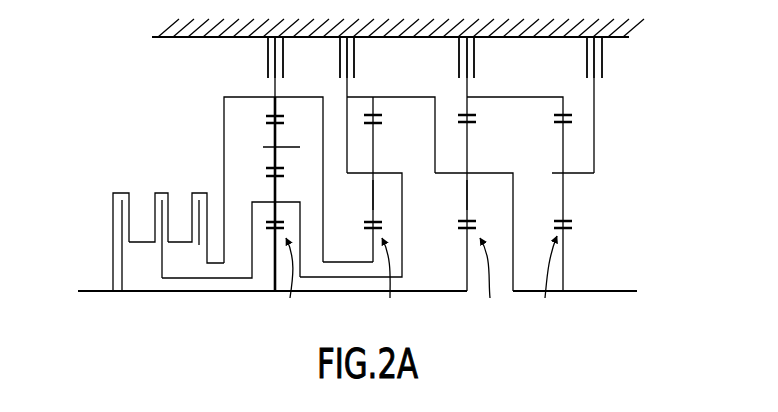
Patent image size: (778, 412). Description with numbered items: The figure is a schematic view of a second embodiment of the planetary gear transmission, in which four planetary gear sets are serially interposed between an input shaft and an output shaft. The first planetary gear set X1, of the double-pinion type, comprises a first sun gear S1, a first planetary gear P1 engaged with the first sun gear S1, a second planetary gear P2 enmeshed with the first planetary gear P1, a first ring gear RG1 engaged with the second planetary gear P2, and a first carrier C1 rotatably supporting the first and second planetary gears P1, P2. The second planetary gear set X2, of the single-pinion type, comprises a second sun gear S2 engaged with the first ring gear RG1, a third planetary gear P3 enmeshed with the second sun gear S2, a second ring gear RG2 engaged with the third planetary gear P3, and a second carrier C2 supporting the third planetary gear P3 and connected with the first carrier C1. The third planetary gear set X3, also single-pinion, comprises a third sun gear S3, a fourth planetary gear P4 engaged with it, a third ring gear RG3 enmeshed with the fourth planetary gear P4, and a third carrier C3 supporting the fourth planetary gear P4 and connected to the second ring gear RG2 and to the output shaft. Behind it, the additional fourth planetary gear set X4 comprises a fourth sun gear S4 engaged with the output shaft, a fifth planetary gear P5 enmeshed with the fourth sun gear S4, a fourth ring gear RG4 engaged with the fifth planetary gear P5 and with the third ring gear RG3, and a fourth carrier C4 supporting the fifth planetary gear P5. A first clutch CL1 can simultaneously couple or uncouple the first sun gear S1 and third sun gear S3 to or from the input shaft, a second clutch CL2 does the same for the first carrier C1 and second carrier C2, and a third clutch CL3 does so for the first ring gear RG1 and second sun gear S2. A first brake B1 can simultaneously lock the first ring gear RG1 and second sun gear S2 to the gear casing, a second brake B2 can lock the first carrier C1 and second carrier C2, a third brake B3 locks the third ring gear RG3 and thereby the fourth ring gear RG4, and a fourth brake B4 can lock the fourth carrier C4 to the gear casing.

The first brake B1 is at (265, 53).
The second brake B2 is at (356, 54).
The third brake B3 is at (477, 54).
The fourth brake B4 is at (604, 55).
The first ring gear RG1 is at (276, 98).
The second ring gear RG2 is at (373, 98).
The third ring gear RG3 is at (467, 98).
The fourth ring gear RG4 is at (565, 104).
The first planetary gear P1 is at (270, 172).
The second planetary gear P2 is at (269, 120).
The third planetary gear P3 is at (373, 194).
The fourth planetary gear P4 is at (467, 193).
The fifth planetary gear P5 is at (563, 133).
The first carrier C1 is at (301, 152).
The second carrier C2 is at (388, 172).
The third carrier C3 is at (488, 173).
The fourth carrier C4 is at (582, 174).
The first sun gear S1 is at (278, 239).
The second sun gear S2 is at (373, 240).
The third sun gear S3 is at (467, 240).
The fourth sun gear S4 is at (567, 243).
The first planetary gear set X1 is at (301, 280).
The second planetary gear set X2 is at (393, 280).
The third planetary gear set X3 is at (493, 280).
The fourth planetary gear set X4 is at (546, 279).
The first clutch CL1 is at (115, 186).
The second clutch CL2 is at (161, 187).
The third clutch CL3 is at (210, 187).